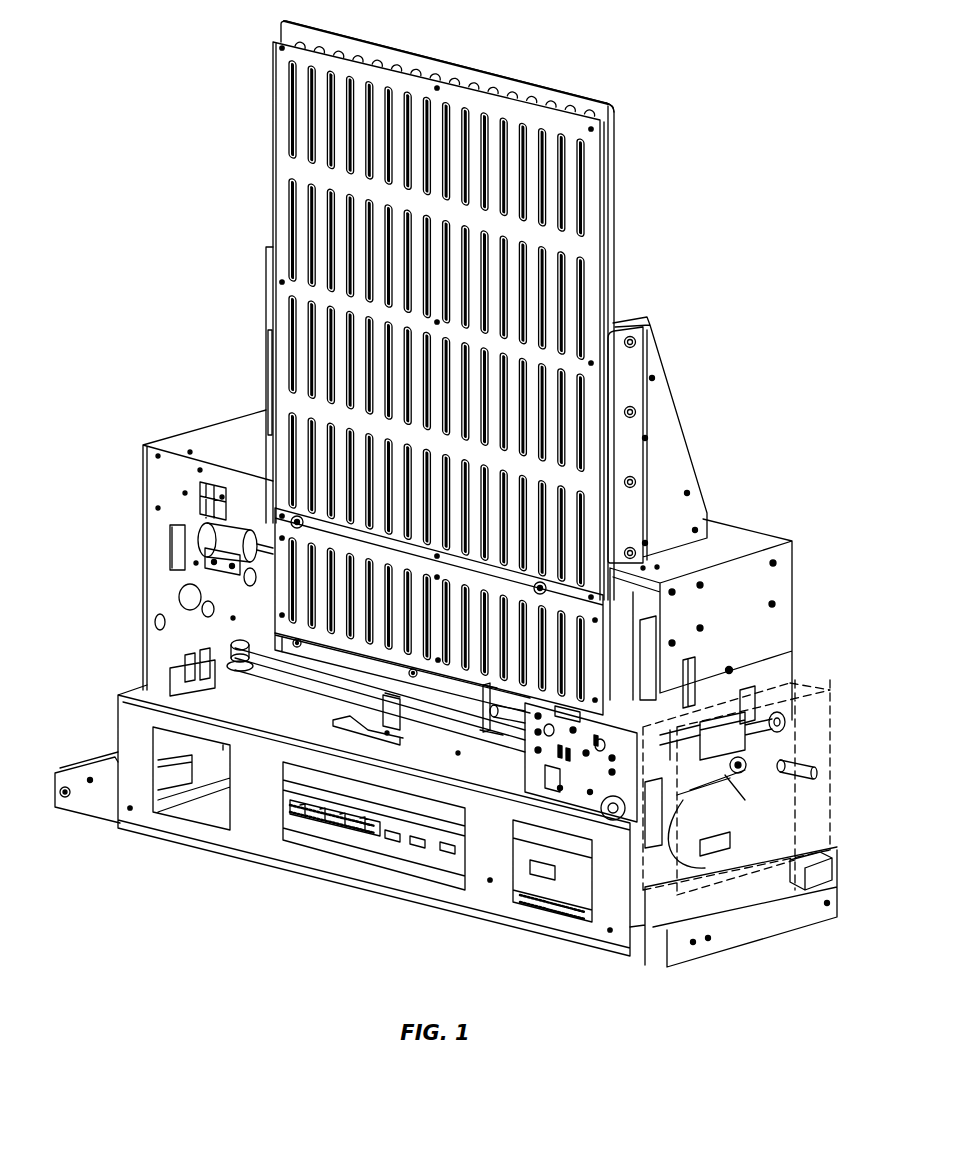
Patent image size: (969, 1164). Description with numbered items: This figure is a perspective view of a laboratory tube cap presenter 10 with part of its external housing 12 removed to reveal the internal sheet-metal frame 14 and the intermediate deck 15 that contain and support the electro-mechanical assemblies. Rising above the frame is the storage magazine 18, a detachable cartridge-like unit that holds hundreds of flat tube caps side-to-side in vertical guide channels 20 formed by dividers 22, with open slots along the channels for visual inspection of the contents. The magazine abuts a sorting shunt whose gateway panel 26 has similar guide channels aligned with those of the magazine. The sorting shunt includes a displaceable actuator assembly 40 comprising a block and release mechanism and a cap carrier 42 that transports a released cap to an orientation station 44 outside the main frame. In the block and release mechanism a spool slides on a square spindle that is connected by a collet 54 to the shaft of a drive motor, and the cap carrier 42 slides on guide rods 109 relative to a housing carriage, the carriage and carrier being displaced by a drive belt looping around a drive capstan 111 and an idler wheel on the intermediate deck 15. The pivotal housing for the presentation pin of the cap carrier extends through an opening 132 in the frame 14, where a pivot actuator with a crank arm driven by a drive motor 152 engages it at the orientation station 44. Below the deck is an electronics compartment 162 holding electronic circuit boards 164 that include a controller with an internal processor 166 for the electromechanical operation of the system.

The tube cap presenter 10 is at (763, 535).
The external housing 12 is at (835, 855).
The internal sheet-metal frame 14 is at (143, 530).
The intermediate deck 15 is at (133, 692).
The storage magazine 18 is at (613, 162).
The vertical guide channels 20 is at (600, 112).
The dividers 22 is at (541, 105).
The gateway panel 26 is at (273, 623).
The displaceable actuator assembly 40 is at (755, 740).
The cap carrier 42 is at (608, 790).
The orientation station 44 is at (826, 722).
The collet 54 is at (203, 532).
The guide rods 109 is at (513, 713).
The drive capstan 111 is at (237, 660).
The opening 132 is at (748, 693).
The drive motor 152 is at (651, 793).
The electronics compartment 162 is at (435, 855).
The electronic circuit boards 164 is at (347, 833).
The internal processor 166 is at (533, 910).